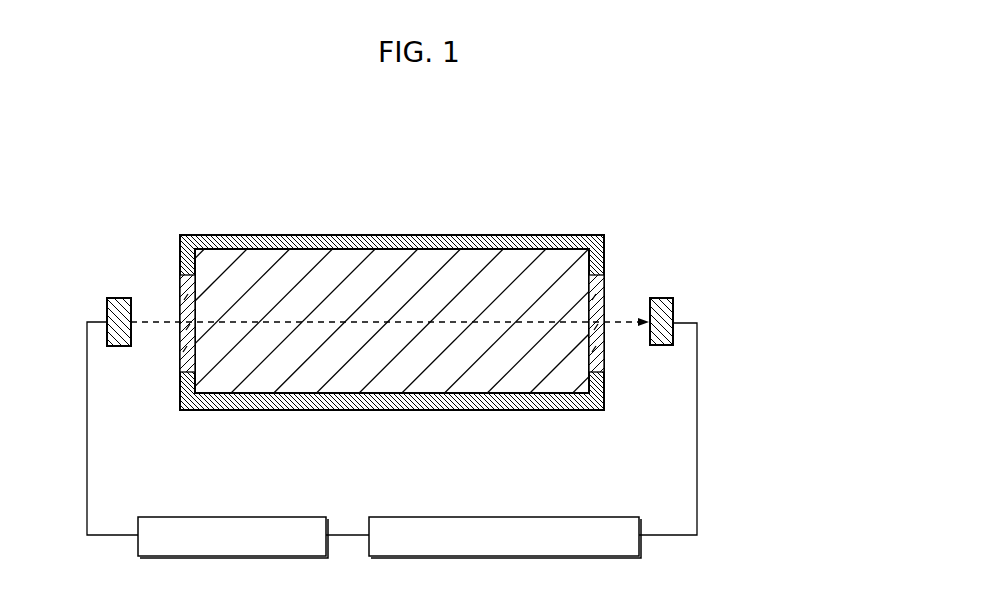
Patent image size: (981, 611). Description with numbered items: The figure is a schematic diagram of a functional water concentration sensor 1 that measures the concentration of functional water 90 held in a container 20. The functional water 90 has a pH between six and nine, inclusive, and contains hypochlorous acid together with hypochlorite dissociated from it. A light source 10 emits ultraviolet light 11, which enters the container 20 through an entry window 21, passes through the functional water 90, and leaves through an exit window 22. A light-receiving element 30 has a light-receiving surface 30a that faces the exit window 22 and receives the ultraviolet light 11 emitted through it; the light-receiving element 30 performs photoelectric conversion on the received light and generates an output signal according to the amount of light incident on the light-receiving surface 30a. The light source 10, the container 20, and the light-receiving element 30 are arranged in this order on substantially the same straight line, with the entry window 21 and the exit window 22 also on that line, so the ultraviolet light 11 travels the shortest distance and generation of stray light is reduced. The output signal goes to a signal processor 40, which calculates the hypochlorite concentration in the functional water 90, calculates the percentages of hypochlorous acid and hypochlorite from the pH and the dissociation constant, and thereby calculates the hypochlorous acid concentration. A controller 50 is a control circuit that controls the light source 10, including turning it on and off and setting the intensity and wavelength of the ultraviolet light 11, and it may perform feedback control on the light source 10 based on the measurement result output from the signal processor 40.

The functional water concentration sensor 1 is at (731, 148).
The light source 10 is at (120, 298).
The ultraviolet light 11 is at (333, 321).
The container 20 is at (495, 243).
The entry window 21 is at (182, 405).
The exit window 22 is at (598, 408).
The light-receiving element 30 is at (660, 298).
The light-receiving surface 30a is at (641, 304).
The signal processor 40 is at (545, 517).
The controller 50 is at (280, 517).
The functional water 90 is at (408, 272).